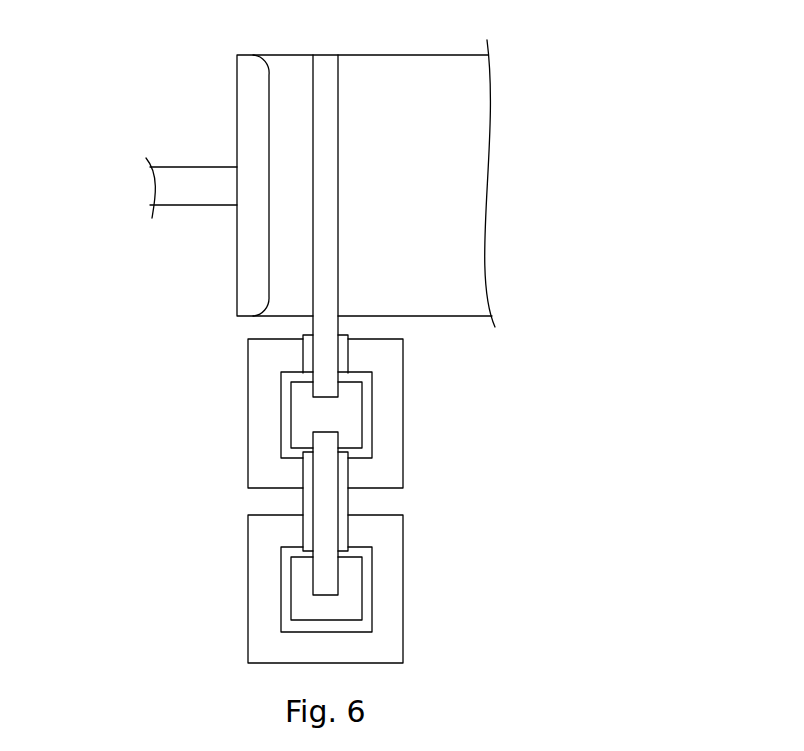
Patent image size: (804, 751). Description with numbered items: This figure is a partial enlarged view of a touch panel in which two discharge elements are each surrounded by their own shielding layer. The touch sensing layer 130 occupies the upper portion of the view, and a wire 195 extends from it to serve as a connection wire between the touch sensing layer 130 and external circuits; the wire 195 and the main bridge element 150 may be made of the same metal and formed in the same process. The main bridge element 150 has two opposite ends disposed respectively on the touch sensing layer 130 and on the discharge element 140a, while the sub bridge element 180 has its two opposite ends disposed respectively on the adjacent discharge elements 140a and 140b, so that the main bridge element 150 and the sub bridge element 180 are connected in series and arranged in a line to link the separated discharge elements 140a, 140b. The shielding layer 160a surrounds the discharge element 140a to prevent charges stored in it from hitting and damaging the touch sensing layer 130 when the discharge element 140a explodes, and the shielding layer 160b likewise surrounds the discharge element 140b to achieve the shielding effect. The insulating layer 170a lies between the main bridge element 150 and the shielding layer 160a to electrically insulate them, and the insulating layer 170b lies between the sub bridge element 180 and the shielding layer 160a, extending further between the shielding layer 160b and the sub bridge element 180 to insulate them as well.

The touch sensing layer 130 is at (473, 183).
The wires 195 is at (167, 182).
The shielding layer 160a is at (370, 475).
The insulating layer 170a is at (308, 355).
The discharge element 140a is at (347, 438).
The main bridge element 150 is at (330, 381).
The insulating layer 170b is at (308, 473).
The shielding layer 160b is at (370, 650).
The discharge element 140b is at (347, 613).
The sub bridge element 180 is at (325, 518).